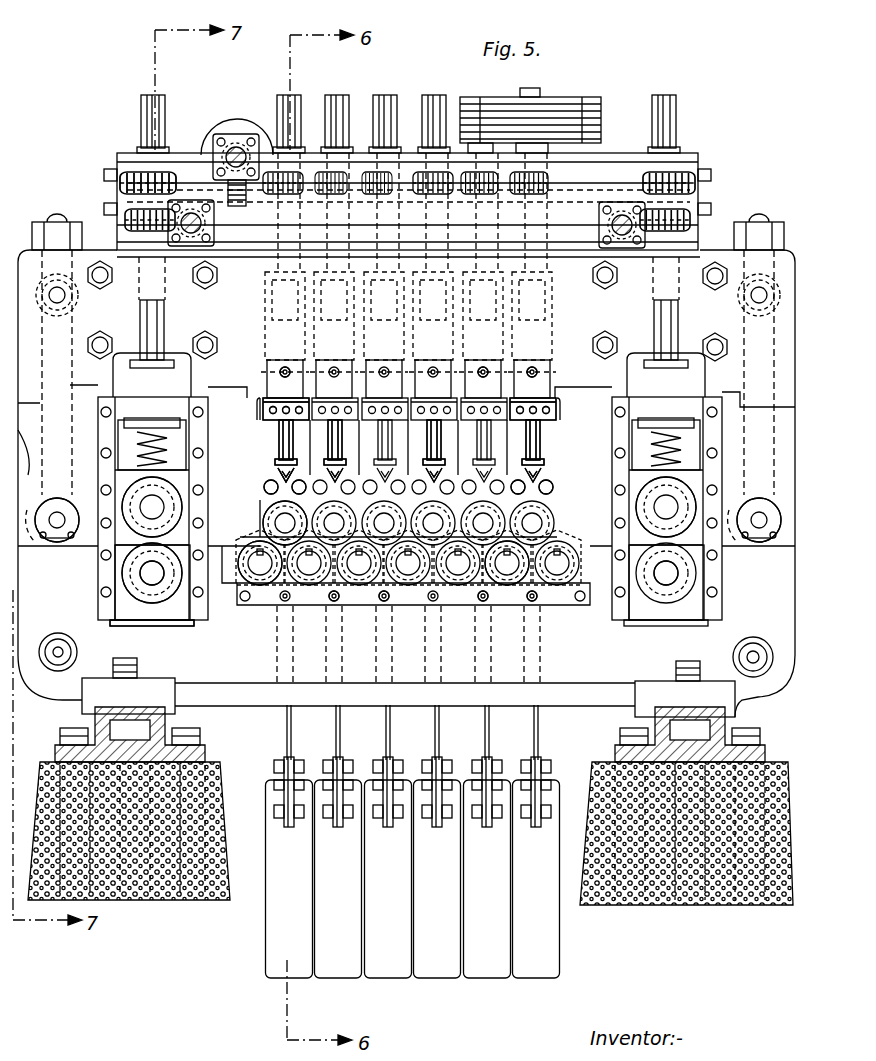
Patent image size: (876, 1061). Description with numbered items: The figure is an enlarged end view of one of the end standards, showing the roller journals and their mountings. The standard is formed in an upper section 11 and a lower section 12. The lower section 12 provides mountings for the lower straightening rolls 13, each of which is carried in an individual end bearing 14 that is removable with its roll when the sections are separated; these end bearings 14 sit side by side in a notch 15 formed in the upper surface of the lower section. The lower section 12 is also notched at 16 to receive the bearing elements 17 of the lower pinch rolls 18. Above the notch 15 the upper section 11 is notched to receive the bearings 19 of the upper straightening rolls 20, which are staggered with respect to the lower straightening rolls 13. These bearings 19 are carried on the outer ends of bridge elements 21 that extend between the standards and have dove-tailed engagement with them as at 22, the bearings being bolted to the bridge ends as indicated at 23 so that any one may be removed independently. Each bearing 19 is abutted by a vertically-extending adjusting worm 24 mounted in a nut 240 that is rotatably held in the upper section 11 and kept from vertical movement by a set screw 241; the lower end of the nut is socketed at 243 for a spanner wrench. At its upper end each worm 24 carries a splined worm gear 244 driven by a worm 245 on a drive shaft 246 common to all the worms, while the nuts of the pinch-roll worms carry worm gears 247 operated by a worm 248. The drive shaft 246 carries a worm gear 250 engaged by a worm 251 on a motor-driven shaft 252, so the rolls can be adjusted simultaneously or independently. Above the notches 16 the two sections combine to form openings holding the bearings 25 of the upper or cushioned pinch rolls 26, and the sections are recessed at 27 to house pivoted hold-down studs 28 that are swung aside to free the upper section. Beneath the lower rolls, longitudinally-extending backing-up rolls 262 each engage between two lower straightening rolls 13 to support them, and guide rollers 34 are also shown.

The upper section 11 is at (212, 348).
The lower section 12 is at (408, 687).
The lower straightening rolls 13 is at (265, 575).
The end bearing 14 is at (240, 590).
The notch 15 is at (192, 614).
The notch 16 is at (118, 608).
The bearing elements 17 is at (128, 612).
The lower pinch rolls 18 is at (152, 585).
The bearings 19 is at (278, 498).
The upper straightening rolls 20 is at (282, 527).
The bridge elements 21 is at (332, 432).
The dove-tailed engagement 22 is at (548, 530).
The bolts 23 is at (560, 505).
The adjusting worm 24 is at (165, 388).
The bearings 25 is at (130, 560).
The upper pinch rolls 26 is at (150, 508).
The recess 27 is at (48, 440).
The hold-down studs 28 is at (48, 378).
The guide roller 34 is at (272, 510).
The nut 240 is at (314, 370).
The set screw 241 is at (484, 369).
The socket 243 is at (264, 412).
The worm gear 244 is at (127, 172).
The worm 245 is at (128, 198).
The drive shaft 246 is at (628, 185).
The worm gears 247 is at (127, 225).
The worm 248 is at (262, 233).
The worm gear 250 is at (230, 198).
The worm 251 is at (215, 148).
The shaft 252 is at (238, 148).
The backing-up rolls 262 is at (302, 605).